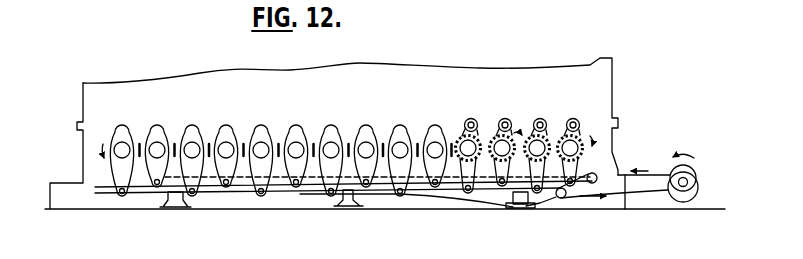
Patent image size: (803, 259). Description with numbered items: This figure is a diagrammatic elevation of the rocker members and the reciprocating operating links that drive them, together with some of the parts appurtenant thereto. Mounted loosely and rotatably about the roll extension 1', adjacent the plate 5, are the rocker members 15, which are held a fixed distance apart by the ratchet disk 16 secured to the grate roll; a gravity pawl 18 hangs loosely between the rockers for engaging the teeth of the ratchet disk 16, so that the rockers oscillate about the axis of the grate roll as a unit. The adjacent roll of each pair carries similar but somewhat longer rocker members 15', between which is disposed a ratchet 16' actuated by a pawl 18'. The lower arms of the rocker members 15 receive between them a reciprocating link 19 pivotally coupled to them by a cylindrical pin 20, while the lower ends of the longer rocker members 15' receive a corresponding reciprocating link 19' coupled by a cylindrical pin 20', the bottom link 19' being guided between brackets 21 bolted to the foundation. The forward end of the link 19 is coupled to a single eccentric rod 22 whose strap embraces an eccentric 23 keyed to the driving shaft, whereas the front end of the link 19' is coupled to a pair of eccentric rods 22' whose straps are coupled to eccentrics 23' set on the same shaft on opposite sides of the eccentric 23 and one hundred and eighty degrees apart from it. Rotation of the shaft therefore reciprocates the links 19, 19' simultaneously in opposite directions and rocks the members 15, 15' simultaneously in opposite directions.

The roll extension 1' is at (569, 178).
The plate 5 is at (119, 157).
The rocker member 15 is at (194, 141).
The rocker member 15' is at (160, 145).
The ratchet disk 16 is at (546, 140).
The ratchet 16' is at (509, 138).
The gravity pawl 18 is at (549, 113).
The pawl 18' is at (508, 113).
The reciprocating link 19 is at (377, 208).
The reciprocating link 19' is at (343, 220).
The cylindrical pin 20 is at (324, 210).
The cylindrical pin 20' is at (293, 218).
The bracket 21 is at (175, 207).
The eccentric rod 22 is at (645, 150).
The eccentric rod 22' is at (615, 213).
The eccentric 23 is at (702, 164).
The eccentric 23' is at (704, 189).